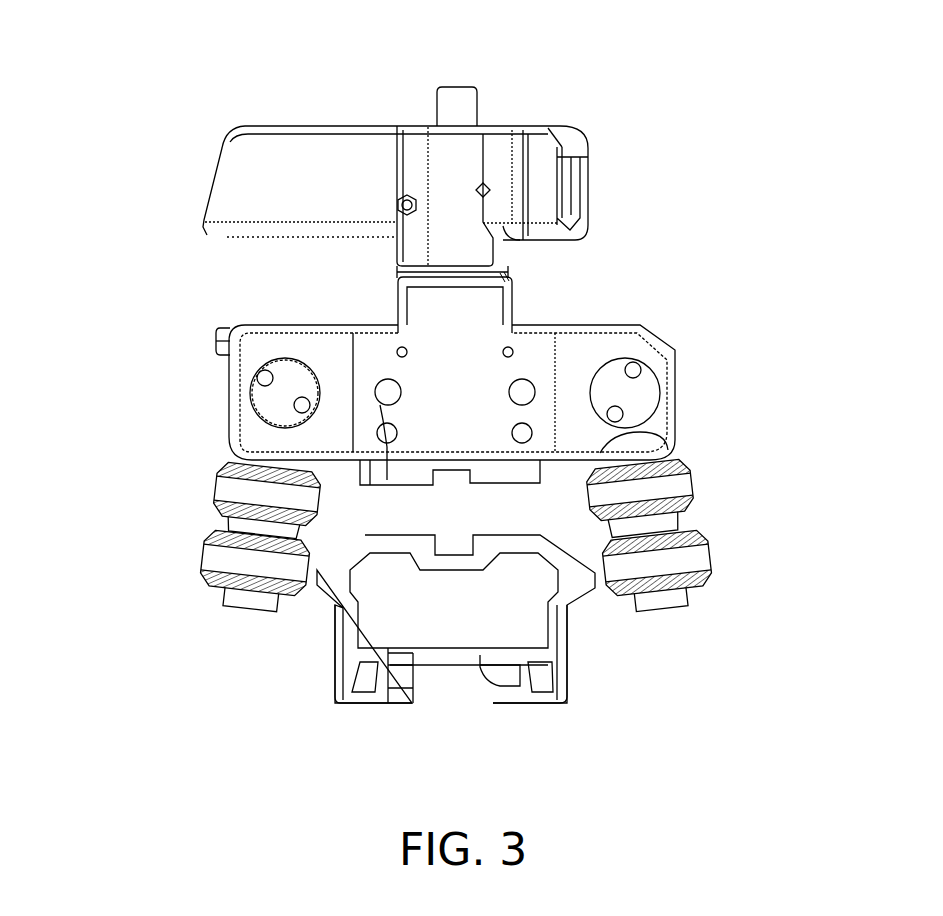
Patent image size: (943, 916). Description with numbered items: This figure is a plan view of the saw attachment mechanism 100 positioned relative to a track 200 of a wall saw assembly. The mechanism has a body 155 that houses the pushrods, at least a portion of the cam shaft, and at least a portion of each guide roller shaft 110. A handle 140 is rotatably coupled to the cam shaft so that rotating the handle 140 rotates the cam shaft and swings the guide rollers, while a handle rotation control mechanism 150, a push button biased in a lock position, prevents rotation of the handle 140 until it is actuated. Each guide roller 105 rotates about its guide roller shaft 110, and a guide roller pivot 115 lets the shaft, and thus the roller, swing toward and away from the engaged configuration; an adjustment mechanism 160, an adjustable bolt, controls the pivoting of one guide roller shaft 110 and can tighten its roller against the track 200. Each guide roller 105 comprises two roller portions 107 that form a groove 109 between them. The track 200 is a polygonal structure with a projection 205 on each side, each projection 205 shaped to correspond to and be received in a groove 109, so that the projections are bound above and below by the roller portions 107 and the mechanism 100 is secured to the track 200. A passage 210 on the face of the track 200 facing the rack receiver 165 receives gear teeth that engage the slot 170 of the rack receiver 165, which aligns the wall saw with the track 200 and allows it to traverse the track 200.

The saw attachment mechanism 100 is at (296, 104).
The handle 140 is at (207, 192).
The handle rotation control mechanism 150 is at (482, 97).
The body 155 is at (672, 357).
The adjustment mechanism 160 is at (220, 338).
The rack receiver 165 is at (375, 392).
The guide roller pivot 115 is at (270, 398).
The slot 170 is at (477, 478).
The groove 109 is at (220, 518).
The guide roller 105 is at (200, 573).
The roller portions 107 is at (697, 487).
The guide roller shaft 110 is at (690, 610).
The track 200 is at (480, 657).
The projection 205 is at (317, 572).
The passage 210 is at (451, 545).